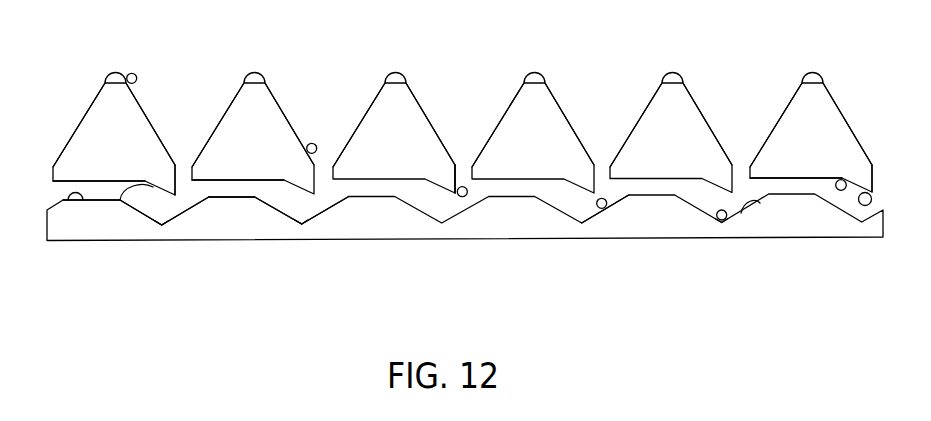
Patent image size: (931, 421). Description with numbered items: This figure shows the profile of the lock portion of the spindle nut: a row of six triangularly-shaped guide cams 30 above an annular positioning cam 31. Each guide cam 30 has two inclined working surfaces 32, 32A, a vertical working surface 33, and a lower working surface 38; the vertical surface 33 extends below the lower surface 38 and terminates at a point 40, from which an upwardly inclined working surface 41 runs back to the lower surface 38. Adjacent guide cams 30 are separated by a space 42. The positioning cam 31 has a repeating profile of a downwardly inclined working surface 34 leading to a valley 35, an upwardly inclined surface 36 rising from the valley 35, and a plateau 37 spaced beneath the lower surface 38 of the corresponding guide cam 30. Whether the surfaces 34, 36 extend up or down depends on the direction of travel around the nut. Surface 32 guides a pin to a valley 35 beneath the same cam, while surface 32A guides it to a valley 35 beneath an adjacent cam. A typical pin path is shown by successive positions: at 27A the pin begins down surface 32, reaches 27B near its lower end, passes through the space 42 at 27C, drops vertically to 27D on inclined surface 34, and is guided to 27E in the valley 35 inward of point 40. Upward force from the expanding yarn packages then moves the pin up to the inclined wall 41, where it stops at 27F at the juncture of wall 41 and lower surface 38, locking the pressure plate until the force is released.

The pin position 27A is at (134, 73).
The pin position 27B is at (312, 143).
The pin position 27C is at (465, 187).
The pin position 27D is at (605, 198).
The pin position 27E is at (722, 220).
The pin position 27F is at (839, 190).
The guide cam 30 is at (138, 127).
The positioning cam 31 is at (371, 237).
The working surface 32 is at (151, 122).
The inclined surface 32A is at (83, 118).
The vertical working surface 33 is at (175, 178).
The inclined working surface 34 is at (199, 203).
The valley 35 is at (162, 225).
The upwardly inclined surface 36 is at (137, 210).
The plateau 37 is at (66, 202).
The lower working surface 38 is at (83, 180).
The point 40 is at (176, 193).
The working surface 41 is at (122, 202).
The space 42 is at (463, 170).